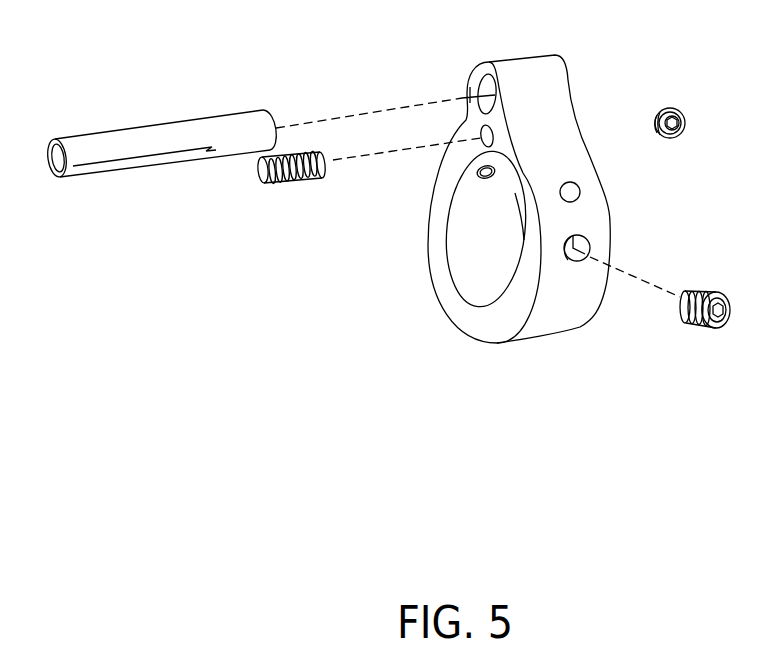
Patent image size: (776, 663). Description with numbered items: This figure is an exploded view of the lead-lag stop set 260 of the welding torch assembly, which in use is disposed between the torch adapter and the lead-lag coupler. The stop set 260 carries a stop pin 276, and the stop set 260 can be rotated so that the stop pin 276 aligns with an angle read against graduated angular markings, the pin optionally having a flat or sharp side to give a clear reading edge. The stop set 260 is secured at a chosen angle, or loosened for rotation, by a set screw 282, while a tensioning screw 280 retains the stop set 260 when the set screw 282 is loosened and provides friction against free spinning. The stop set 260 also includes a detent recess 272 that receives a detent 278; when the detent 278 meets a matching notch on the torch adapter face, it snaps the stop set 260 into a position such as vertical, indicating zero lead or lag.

The lead-lag stop set 260 is at (528, 335).
The detent recess 272 is at (482, 137).
The stop pin 276 is at (80, 137).
The detent 278 is at (281, 179).
The tensioning screw 280 is at (680, 137).
The set screw 282 is at (703, 327).